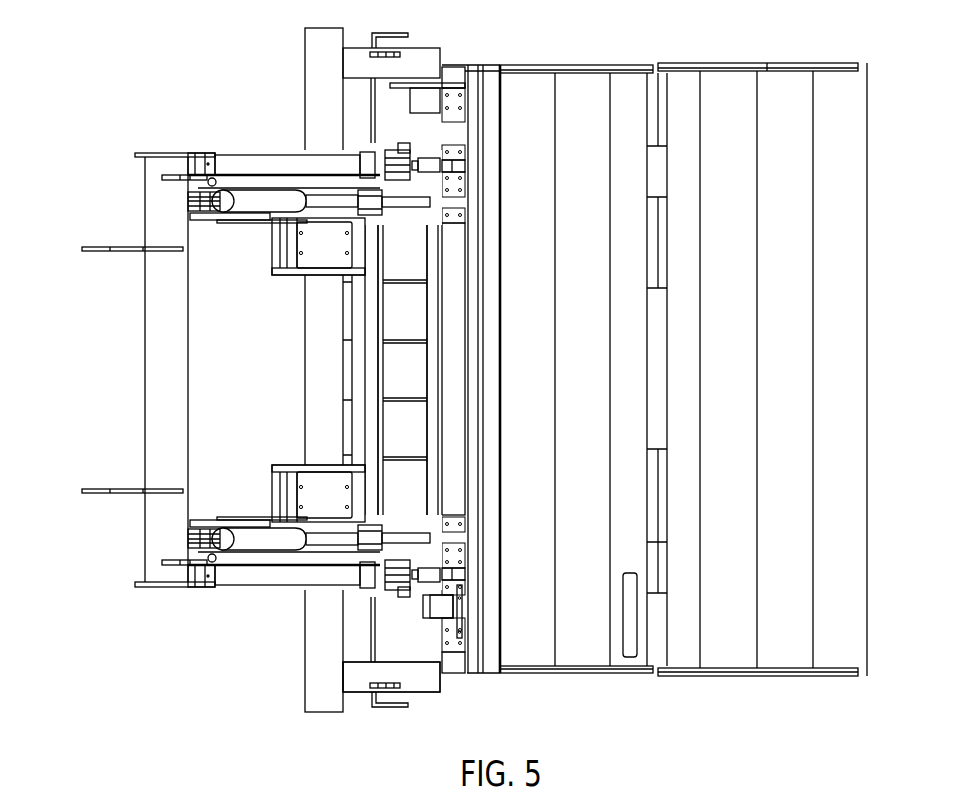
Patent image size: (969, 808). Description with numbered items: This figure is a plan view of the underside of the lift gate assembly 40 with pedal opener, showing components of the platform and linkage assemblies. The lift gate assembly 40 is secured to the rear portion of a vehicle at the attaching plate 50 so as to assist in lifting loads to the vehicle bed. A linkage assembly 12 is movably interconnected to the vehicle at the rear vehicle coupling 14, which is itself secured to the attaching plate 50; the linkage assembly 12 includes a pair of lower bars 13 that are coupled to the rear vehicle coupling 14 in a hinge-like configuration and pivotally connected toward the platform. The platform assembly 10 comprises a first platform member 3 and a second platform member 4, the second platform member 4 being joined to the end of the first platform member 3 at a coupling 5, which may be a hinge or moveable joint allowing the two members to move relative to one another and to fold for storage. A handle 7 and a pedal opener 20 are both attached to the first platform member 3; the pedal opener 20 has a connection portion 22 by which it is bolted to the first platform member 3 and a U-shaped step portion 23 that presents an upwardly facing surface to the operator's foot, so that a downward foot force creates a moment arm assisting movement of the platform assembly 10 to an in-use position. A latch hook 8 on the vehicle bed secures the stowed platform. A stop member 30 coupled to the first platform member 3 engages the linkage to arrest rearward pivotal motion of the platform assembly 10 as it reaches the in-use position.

The first platform member 3 is at (578, 95).
The second platform member 4 is at (735, 95).
The coupling 5 is at (656, 68).
The handle 7 is at (622, 638).
The latch hook 8 is at (400, 683).
The platform assembly 10 is at (690, 359).
The linkage assembly 12 is at (251, 150).
The lower bars 13 is at (295, 160).
The rear vehicle coupling 14 is at (165, 152).
The pedal opener 20 is at (423, 606).
The connection portion 22 is at (459, 636).
The U-shaped step portion 23 is at (443, 607).
The stop member 30 is at (420, 160).
The lift gate assembly 40 is at (150, 48).
The attaching plate 50 is at (120, 247).